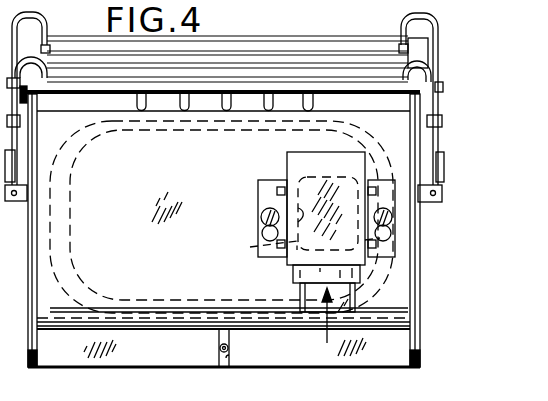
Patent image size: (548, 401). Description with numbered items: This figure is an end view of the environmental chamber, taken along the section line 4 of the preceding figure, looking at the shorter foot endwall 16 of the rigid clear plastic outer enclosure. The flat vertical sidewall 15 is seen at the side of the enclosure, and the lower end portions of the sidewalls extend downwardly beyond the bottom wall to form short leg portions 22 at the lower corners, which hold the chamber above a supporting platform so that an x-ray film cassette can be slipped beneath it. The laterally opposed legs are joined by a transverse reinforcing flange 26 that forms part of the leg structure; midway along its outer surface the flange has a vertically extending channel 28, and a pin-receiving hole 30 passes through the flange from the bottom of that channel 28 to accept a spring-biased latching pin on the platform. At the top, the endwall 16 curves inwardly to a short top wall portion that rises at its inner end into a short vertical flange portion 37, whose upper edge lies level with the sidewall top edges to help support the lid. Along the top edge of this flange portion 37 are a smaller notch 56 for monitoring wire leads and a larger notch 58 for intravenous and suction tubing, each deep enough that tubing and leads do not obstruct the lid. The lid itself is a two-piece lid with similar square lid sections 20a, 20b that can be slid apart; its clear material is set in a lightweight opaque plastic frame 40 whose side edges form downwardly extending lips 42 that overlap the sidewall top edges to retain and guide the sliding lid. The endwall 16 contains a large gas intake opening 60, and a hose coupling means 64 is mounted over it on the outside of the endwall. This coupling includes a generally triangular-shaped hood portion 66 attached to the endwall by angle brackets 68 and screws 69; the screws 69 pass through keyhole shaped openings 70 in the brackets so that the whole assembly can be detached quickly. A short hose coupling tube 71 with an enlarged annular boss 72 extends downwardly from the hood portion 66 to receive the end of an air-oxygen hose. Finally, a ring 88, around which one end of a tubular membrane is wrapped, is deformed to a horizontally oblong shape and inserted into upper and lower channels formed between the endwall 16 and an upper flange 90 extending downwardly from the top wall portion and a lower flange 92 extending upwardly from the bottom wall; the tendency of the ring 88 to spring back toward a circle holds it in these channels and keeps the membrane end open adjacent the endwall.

The environmental chamber (viewed along line 4—4) 4 is at (33, 273).
The sidewall 15 is at (420, 218).
The endwall 16 is at (144, 191).
The lid section 20a is at (420, 20).
The lid section 20b is at (408, 56).
The leg portion 22 is at (383, 52).
The transverse reinforcing flange 26 is at (153, 368).
The channel 28 is at (228, 358).
The pin-receiving hole 30 is at (220, 348).
The vertical flange portion 37 is at (203, 99).
The frame 40 is at (418, 76).
The lip 42 is at (428, 101).
The notch 56 is at (138, 107).
The notch 58 is at (309, 100).
The opening 60 is at (283, 244).
The hose coupling means 64 is at (275, 167).
The hood portion 66 is at (290, 263).
The angle bracket 68 is at (259, 218).
The screw 69 is at (265, 212).
The keyhole shaped opening 70 is at (392, 232).
The hose coupling tube 71 is at (356, 302).
The annular boss 72 is at (362, 276).
The ring 88 is at (68, 233).
The upper flange 90 is at (157, 140).
The lower flange 92 is at (143, 293).